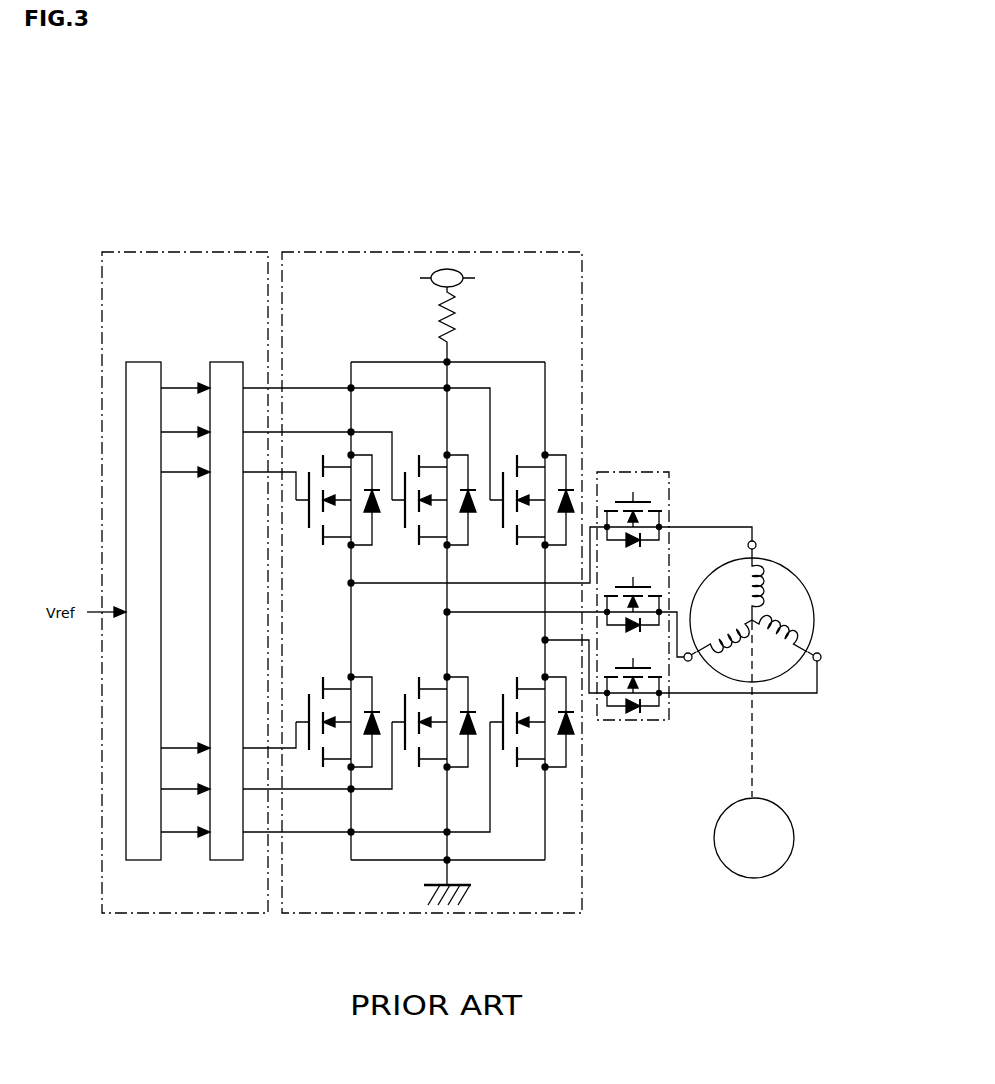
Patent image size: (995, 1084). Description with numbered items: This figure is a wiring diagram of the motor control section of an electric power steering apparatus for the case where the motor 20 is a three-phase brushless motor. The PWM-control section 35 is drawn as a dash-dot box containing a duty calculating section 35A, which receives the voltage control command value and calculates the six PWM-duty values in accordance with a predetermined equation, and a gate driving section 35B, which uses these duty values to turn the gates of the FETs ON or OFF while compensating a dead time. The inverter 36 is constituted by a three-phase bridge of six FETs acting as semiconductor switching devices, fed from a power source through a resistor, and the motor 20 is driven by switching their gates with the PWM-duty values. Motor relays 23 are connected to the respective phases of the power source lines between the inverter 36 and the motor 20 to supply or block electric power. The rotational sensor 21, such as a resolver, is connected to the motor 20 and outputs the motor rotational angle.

The PWM-control section 35 is at (237, 252).
The duty calculating section 35A is at (150, 362).
The gate driving section 35B is at (230, 362).
The inverter 36 is at (554, 252).
The motor relays 23 is at (639, 472).
The motor 20 is at (786, 550).
The rotational sensor 21 is at (779, 800).